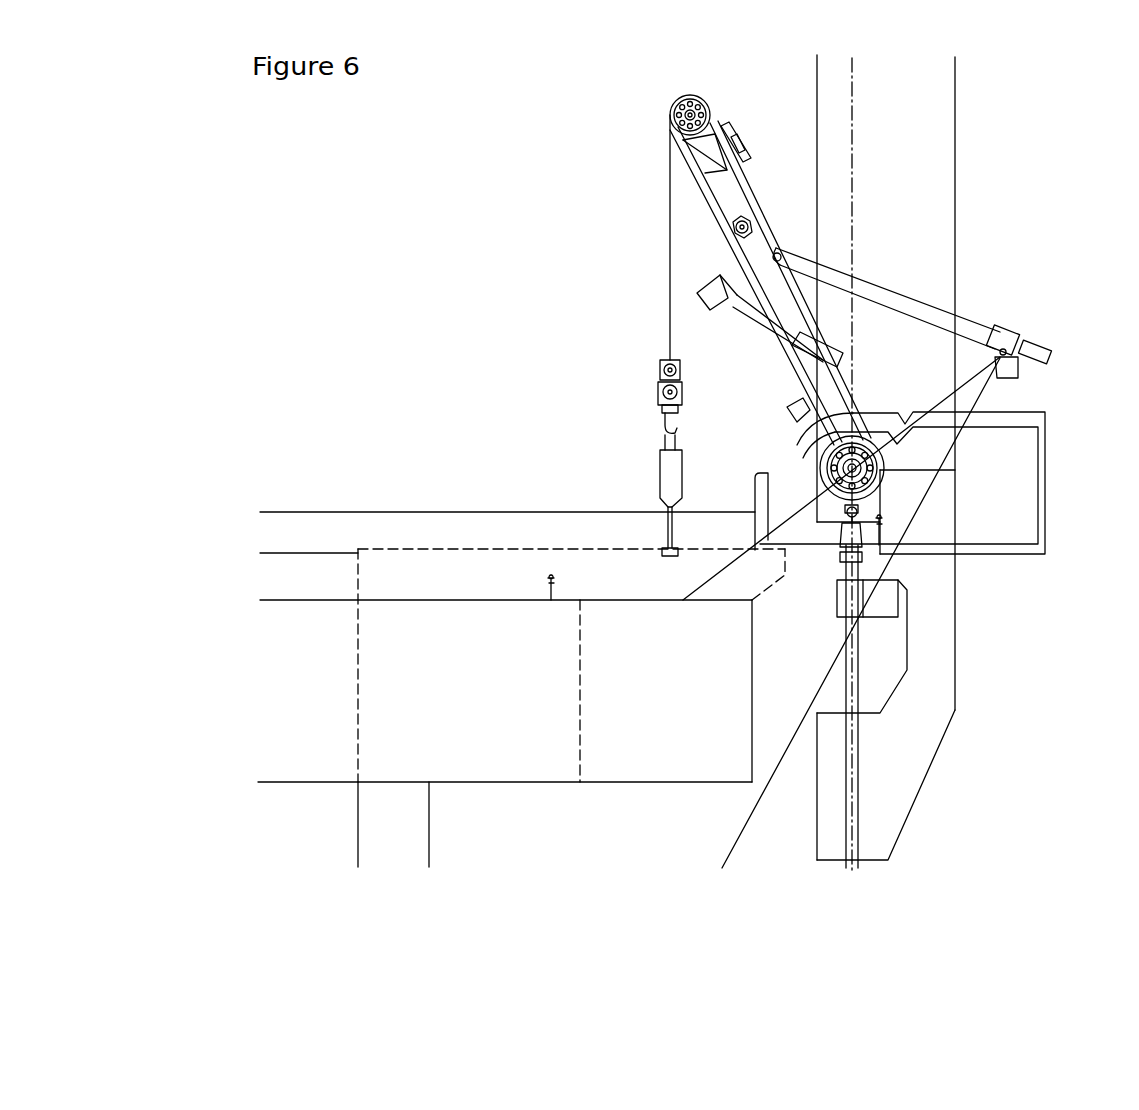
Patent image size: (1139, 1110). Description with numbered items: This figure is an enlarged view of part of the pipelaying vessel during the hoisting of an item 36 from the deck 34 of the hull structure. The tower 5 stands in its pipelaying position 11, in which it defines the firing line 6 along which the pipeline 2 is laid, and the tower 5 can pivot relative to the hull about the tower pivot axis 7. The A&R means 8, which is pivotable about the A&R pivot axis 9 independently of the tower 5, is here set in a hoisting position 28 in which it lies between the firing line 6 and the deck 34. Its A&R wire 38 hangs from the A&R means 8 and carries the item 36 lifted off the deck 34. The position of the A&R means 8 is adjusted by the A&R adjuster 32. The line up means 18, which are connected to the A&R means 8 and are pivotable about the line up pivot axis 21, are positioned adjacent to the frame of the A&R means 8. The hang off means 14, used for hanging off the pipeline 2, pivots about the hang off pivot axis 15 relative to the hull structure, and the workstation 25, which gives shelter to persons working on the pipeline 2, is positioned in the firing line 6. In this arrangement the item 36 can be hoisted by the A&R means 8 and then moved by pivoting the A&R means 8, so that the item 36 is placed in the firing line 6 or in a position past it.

The pipeline 2 is at (857, 833).
The tower 5 is at (984, 73).
The firing line 6 is at (854, 70).
The tower pivot axis 7 is at (838, 462).
The A&R means 8 is at (645, 122).
The A&R pivot axis 9 is at (838, 452).
The pipelaying position 11 is at (1019, 92).
The hang off means 14 is at (897, 597).
The hang off pivot axis 15 is at (808, 496).
The line up means 18 is at (769, 353).
The line up pivot axis 21 is at (750, 222).
The workstation 25 is at (1028, 520).
The hoisting position 28 is at (630, 135).
The A&R adjuster 32 is at (1050, 352).
The deck 34 is at (268, 600).
The item 36 is at (663, 478).
The A&R wire 38 is at (670, 238).